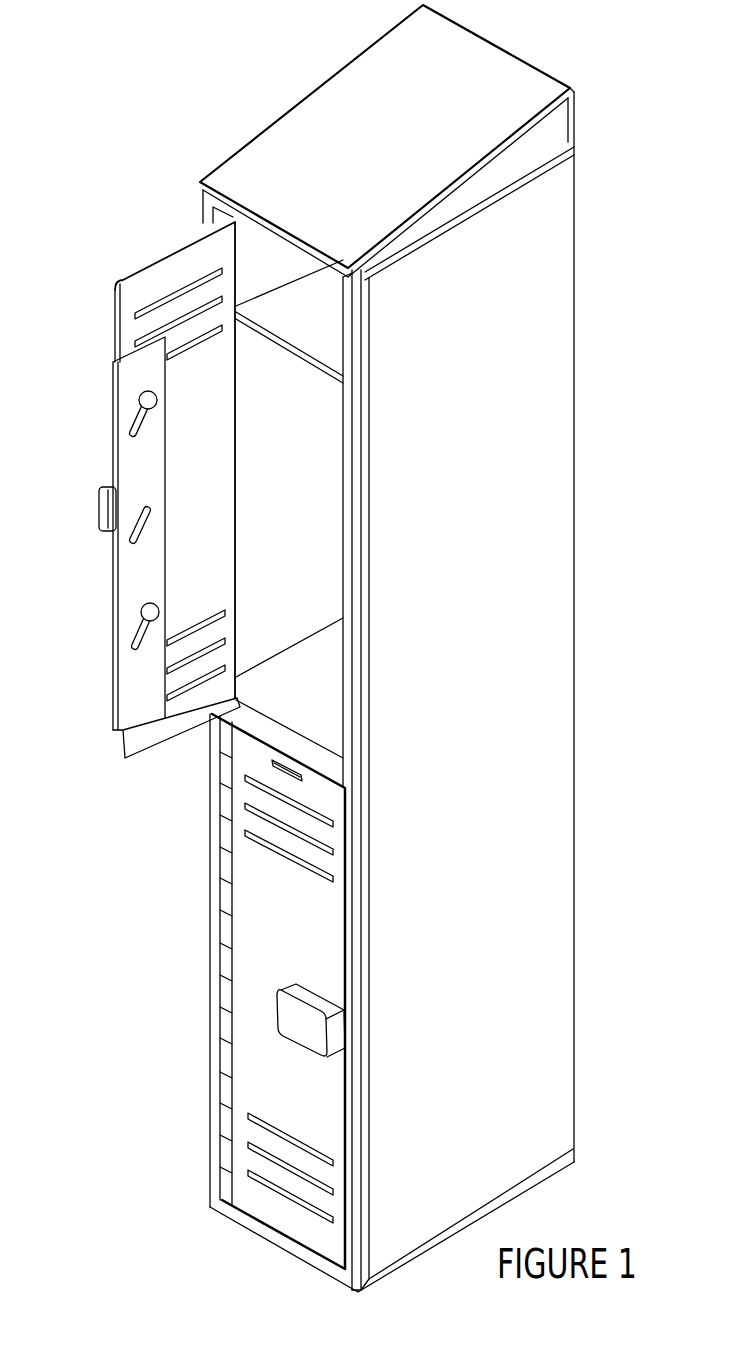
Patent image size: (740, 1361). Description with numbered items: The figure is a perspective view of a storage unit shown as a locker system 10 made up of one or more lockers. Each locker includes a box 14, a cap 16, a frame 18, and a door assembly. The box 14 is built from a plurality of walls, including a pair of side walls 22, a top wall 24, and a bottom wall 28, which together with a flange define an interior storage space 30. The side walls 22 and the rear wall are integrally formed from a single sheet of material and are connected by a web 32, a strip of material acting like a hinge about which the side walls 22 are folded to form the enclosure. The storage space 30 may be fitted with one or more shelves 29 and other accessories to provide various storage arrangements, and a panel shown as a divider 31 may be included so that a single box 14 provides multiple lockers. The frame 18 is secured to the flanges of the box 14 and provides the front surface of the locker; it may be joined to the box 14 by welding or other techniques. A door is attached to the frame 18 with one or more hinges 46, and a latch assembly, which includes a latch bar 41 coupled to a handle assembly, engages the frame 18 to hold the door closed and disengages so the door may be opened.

The locker system 10 is at (105, 81).
The box 14 is at (387, 654).
The cap 16 is at (484, 37).
The frame 18 is at (363, 712).
The side wall 22 is at (473, 432).
The top wall 24 is at (528, 145).
The bottom wall 28 is at (448, 1242).
The shelf 29 is at (298, 321).
The interior storage space 30 is at (278, 690).
The divider 31 is at (316, 676).
The web 32 is at (578, 642).
The latch bar 41 is at (148, 484).
The hinge 46 is at (220, 1128).